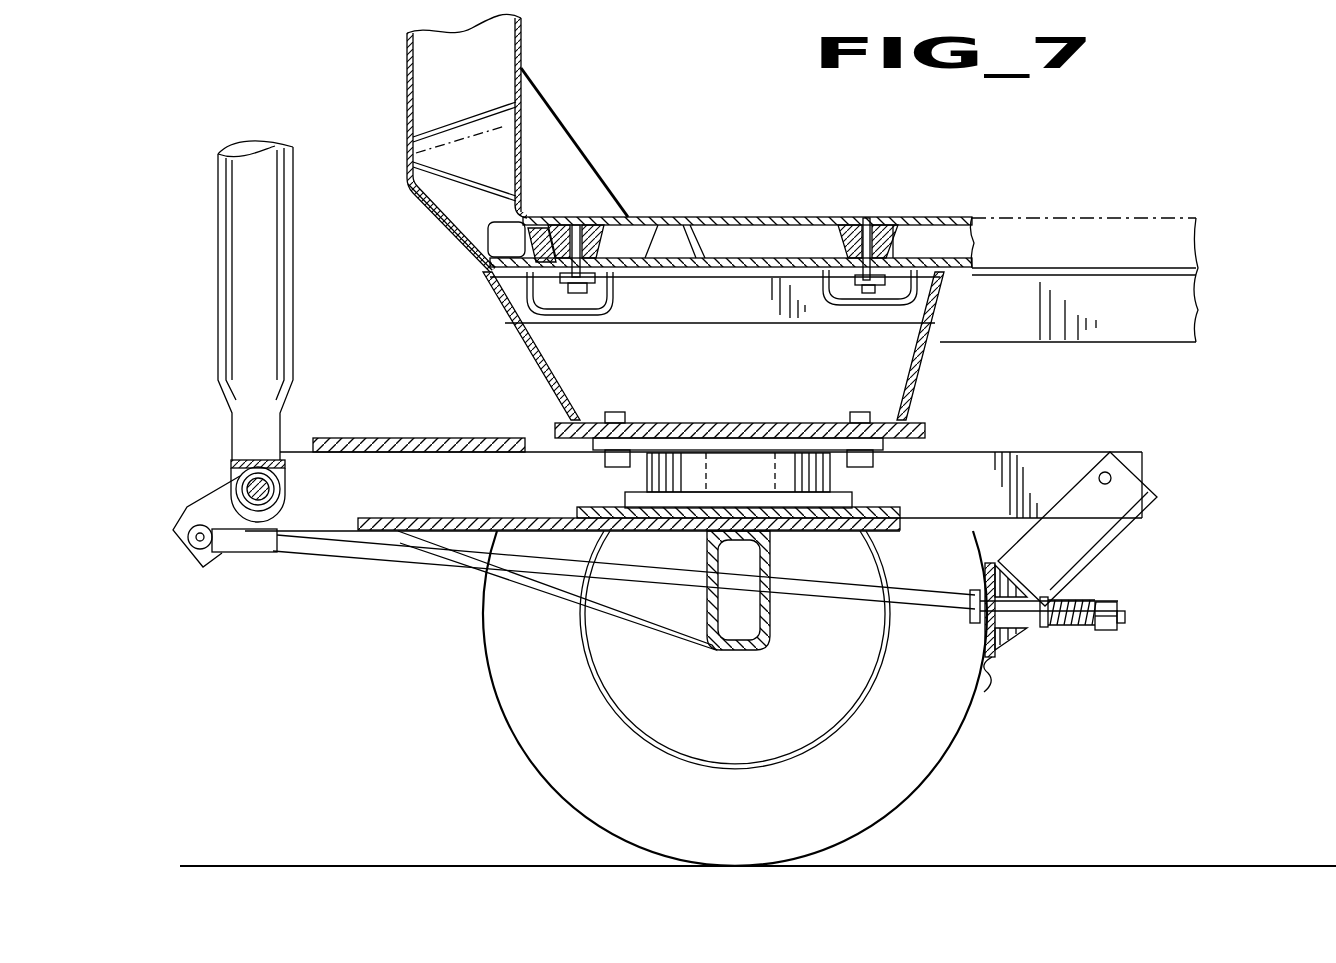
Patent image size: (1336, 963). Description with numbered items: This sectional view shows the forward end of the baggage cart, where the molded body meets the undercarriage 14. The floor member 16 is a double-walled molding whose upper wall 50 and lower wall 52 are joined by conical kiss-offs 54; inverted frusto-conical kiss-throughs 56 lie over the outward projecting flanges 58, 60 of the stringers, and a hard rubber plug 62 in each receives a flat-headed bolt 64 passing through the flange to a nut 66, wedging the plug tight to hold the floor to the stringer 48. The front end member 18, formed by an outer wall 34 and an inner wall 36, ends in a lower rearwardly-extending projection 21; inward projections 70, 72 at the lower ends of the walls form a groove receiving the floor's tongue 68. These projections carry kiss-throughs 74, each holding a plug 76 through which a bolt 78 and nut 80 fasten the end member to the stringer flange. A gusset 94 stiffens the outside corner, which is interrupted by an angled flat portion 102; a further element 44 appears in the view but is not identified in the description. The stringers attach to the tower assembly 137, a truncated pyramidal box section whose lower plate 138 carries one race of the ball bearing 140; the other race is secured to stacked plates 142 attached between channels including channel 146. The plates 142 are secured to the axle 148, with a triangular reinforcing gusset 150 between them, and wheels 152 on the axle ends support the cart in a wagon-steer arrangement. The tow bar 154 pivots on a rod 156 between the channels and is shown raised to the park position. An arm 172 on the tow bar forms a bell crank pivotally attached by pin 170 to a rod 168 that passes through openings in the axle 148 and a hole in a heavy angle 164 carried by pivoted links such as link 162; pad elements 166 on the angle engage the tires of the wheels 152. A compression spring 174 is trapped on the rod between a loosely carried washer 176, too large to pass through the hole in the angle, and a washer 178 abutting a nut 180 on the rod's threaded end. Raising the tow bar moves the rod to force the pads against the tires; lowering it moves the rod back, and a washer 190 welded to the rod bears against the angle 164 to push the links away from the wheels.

The undercarriage 14 is at (1198, 310).
The floor member 16 is at (965, 215).
The front end member 18 is at (398, 38).
The lower rearwardly-extending projection 21 is at (507, 270).
The outer wall 34 is at (407, 83).
The inner wall 36 is at (525, 42).
The deflector plates 44 is at (408, 158).
The stringer 48 is at (1138, 330).
The upper wall 50 is at (786, 217).
The lower wall 52 is at (950, 267).
The kiss-offs 54 is at (708, 241).
The kiss-throughs 56 is at (898, 243).
The outward projecting flange 58 is at (1100, 266).
The outward projecting flange 60 is at (887, 303).
The plug 62 is at (852, 217).
The flat-headed bolt 64 is at (876, 218).
The nut 66 is at (857, 293).
The tongue 68 is at (505, 220).
The inward projection 70 is at (687, 268).
The inward projection 72 is at (672, 217).
The kiss-throughs 74 is at (555, 240).
The hard rubber plug 76 is at (600, 217).
The flat-headed bolt 78 is at (580, 297).
The nut 80 is at (595, 298).
The gusset 94 is at (540, 117).
The angled flat portion 102 is at (545, 150).
The tower assembly 137 is at (528, 345).
The lower plate 138 is at (925, 428).
The ball bearing 140 is at (645, 478).
The stacked plates 142 is at (900, 508).
The channel 146 is at (1050, 452).
The axle 148 is at (722, 650).
The triangular reinforcing gusset 150 is at (648, 605).
The wheels 152 is at (702, 815).
The tow bar 154 is at (218, 215).
The rod 156 is at (272, 489).
The link 162 is at (1140, 485).
The heavy angle 164 is at (997, 643).
The pad elements 166 is at (992, 678).
The rod 168 is at (351, 553).
The pin 170 is at (192, 542).
The arm 172 is at (210, 565).
The compression spring 174 is at (1073, 630).
The washer 176 is at (1053, 597).
The washer 178 is at (1100, 603).
The nut 180 is at (1112, 630).
The washer 190 is at (982, 592).